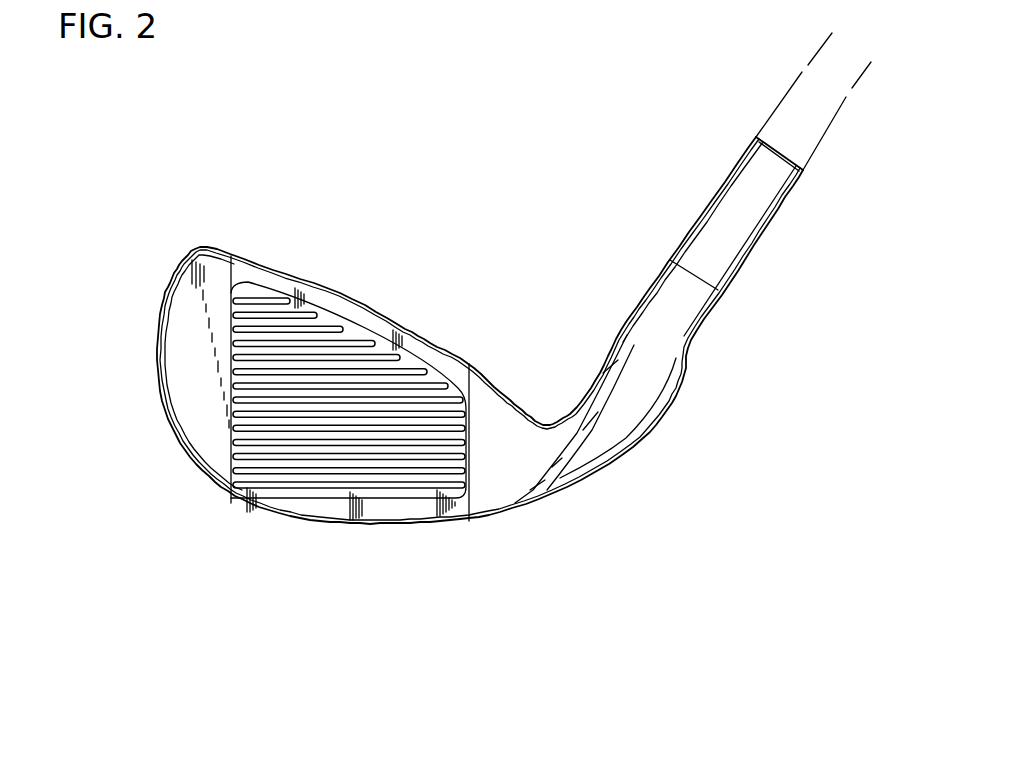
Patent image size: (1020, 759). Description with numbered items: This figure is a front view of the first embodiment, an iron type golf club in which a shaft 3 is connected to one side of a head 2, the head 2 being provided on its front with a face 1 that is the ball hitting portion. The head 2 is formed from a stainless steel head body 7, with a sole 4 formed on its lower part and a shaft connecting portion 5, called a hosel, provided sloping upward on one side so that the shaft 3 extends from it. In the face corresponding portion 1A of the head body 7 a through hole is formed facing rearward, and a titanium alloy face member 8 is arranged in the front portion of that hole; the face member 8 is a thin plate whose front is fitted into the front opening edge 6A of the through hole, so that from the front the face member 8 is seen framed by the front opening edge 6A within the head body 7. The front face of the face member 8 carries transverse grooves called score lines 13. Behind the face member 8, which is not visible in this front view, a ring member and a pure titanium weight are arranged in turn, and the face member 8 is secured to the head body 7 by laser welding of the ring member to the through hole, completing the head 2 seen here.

The face 1 is at (492, 335).
The face corresponding portion 1A is at (359, 406).
The head 2 is at (492, 343).
The shaft 3 is at (787, 102).
The sole 4 is at (343, 527).
The shaft connecting portion 5 is at (635, 305).
The front opening edge 6A is at (325, 406).
The head body 7 is at (168, 285).
The face member 8 is at (321, 406).
The score lines 13 is at (312, 483).